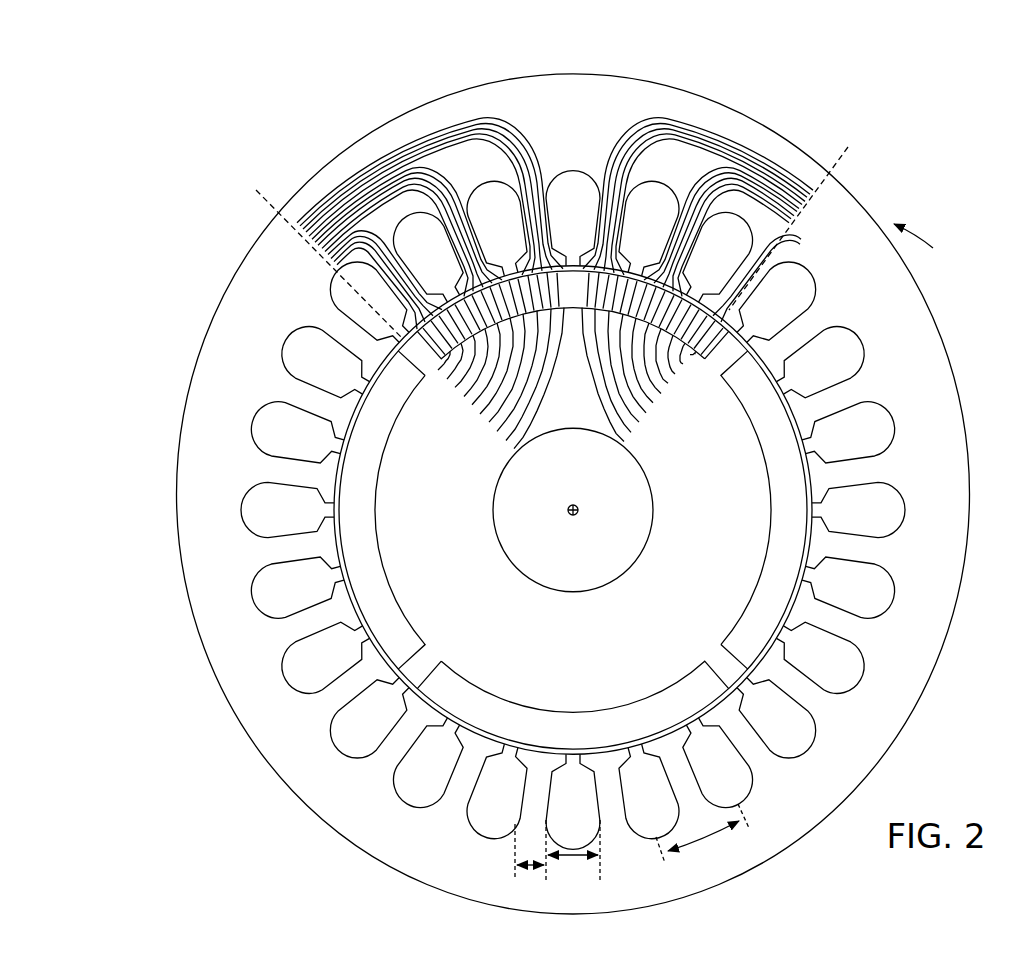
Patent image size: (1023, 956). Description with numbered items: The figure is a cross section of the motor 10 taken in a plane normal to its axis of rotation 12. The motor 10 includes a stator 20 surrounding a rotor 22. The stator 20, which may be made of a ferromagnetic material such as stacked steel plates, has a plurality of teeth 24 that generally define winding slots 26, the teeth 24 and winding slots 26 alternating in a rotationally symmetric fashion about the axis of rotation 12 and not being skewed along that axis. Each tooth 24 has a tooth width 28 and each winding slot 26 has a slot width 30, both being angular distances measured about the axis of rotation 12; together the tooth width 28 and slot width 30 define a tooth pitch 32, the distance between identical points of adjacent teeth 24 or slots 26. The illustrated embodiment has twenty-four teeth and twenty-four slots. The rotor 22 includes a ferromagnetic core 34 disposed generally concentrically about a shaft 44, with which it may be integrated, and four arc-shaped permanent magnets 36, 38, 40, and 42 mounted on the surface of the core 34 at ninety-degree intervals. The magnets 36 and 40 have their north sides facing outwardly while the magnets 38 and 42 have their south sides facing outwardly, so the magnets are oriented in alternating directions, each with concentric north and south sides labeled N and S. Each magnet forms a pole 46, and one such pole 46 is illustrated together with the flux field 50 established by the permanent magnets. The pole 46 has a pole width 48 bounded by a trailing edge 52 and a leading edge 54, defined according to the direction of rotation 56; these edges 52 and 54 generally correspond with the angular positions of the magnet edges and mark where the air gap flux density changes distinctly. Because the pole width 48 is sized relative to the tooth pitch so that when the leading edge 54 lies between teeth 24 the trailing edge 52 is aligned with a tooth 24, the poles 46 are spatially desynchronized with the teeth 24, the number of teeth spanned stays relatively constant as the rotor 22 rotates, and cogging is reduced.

The motor 10 is at (575, 483).
The axis of rotation 12 is at (578, 506).
The stator 20 is at (573, 486).
The rotor 22 is at (609, 511).
The teeth 24 is at (752, 282).
The winding slots 26 is at (355, 303).
The tooth width 28 is at (523, 868).
The slot width 30 is at (572, 858).
The tooth pitch 32 is at (690, 843).
The core 34 is at (565, 521).
The permanent magnet 36 is at (678, 365).
The permanent magnet 38 is at (770, 548).
The permanent magnet 40 is at (542, 706).
The permanent magnet 42 is at (378, 563).
The shaft 44 is at (531, 583).
The pole 46 is at (594, 148).
The pole width 48 is at (573, 486).
The flux field 50 is at (797, 200).
The trailing edge 52 is at (812, 150).
The leading edge 54 is at (292, 196).
The direction of rotation 56 is at (933, 235).